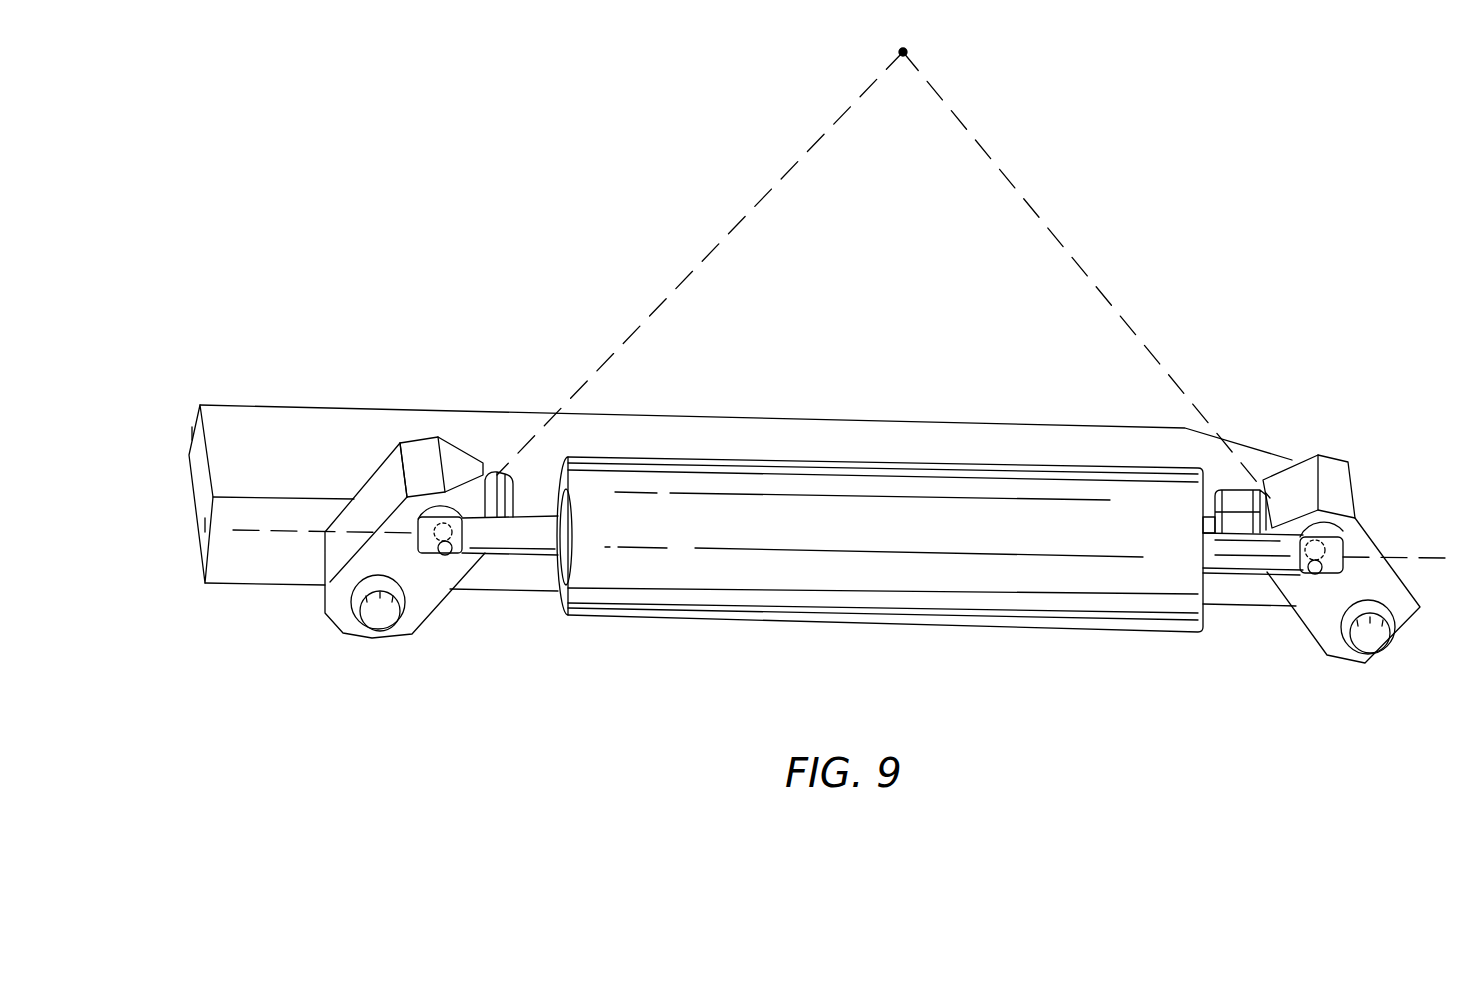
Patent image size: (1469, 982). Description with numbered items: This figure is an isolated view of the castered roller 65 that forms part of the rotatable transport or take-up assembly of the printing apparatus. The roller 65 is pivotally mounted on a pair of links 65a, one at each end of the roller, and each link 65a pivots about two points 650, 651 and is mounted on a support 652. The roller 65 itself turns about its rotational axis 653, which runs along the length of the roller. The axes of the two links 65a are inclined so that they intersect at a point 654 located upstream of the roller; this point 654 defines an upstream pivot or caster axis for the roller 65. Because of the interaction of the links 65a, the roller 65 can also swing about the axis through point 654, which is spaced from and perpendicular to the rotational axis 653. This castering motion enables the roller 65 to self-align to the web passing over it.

The castered roller 65 is at (860, 605).
The links 65a is at (420, 617).
The pivot point 650 is at (377, 609).
The pivot point 651 is at (452, 555).
The support 652 is at (198, 472).
The rotational axis 653 is at (280, 531).
The point 654 is at (912, 53).